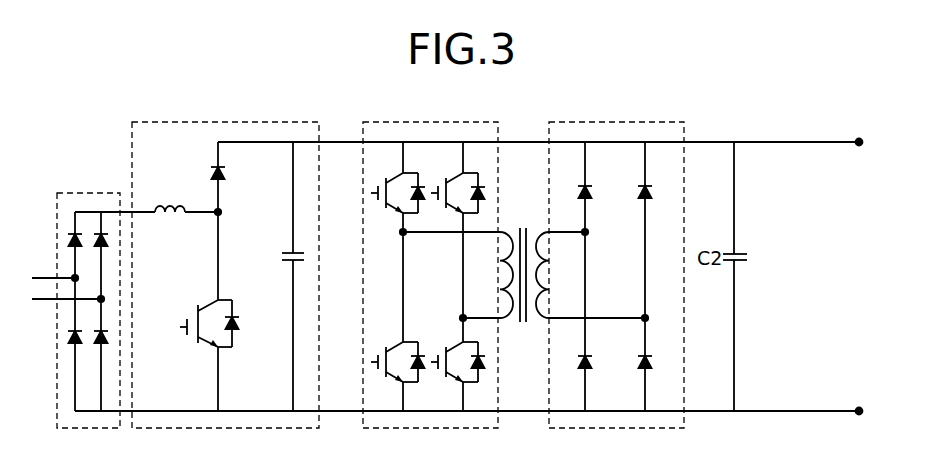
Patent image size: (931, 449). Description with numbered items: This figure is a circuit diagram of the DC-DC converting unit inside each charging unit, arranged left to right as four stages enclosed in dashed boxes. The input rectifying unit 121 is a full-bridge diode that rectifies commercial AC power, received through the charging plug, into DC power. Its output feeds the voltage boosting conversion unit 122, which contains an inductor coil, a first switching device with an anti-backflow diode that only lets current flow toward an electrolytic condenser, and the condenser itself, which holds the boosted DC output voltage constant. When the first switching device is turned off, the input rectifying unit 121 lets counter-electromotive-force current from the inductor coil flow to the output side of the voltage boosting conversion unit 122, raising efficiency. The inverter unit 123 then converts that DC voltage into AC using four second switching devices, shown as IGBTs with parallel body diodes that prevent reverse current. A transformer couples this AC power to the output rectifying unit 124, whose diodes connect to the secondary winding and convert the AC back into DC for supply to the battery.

The input rectifying unit 121 is at (93, 298).
The voltage boosting conversion unit 122 is at (225, 260).
The inverter unit 123 is at (456, 260).
The output rectifying unit 124 is at (616, 260).